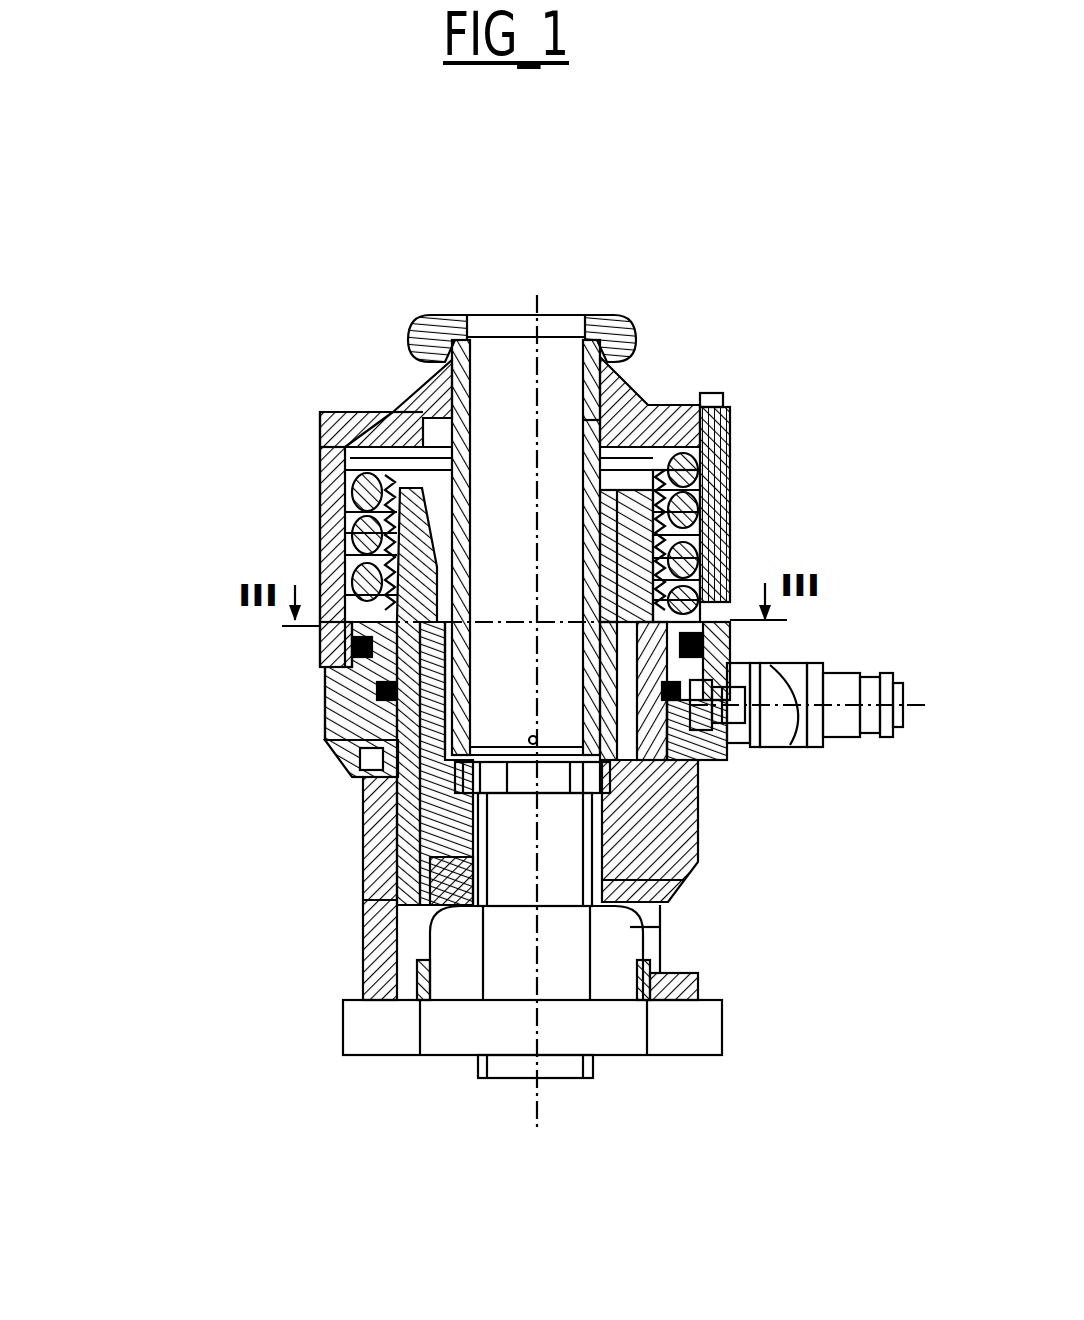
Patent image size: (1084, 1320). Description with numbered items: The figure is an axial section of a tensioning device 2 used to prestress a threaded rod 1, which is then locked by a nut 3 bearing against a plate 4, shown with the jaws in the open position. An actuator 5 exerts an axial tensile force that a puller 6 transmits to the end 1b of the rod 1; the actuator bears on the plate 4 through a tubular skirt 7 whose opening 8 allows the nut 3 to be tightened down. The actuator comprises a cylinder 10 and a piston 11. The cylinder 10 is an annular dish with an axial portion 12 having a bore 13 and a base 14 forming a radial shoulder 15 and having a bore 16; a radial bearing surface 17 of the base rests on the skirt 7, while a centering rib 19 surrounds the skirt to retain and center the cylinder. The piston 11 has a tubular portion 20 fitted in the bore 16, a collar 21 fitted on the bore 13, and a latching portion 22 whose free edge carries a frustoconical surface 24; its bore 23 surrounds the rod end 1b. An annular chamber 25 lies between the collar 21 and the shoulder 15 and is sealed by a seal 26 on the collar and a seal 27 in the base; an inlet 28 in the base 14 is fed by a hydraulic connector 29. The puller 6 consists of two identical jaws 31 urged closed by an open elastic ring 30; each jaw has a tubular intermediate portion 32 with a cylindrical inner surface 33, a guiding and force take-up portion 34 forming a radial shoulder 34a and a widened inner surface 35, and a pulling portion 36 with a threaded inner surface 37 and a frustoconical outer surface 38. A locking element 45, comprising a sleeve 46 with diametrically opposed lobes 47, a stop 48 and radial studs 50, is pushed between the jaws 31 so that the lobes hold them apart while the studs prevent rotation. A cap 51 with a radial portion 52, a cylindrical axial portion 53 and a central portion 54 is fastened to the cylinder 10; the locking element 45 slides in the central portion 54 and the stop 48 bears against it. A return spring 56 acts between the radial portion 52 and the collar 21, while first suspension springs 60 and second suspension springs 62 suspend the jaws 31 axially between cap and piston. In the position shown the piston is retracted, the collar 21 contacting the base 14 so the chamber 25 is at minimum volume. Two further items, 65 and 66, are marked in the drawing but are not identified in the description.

The threaded rod 1 is at (571, 1067).
The end of the threaded rod 1b is at (578, 906).
The tensioning device 2 is at (738, 280).
The nut 3 is at (463, 975).
The plate 4 is at (463, 1047).
The actuator 5 is at (740, 413).
The puller 6 is at (320, 515).
The tubular skirt 7 is at (380, 973).
The opening 8 is at (685, 900).
The cylinder 10 is at (333, 738).
The piston 11 is at (703, 805).
The axial portion 12 is at (323, 627).
The bore 13 is at (323, 612).
The base 14 is at (347, 690).
The radial shoulder 15 is at (322, 688).
The bore 16 is at (358, 742).
The radial bearing surface 17 is at (362, 793).
The circumferential axial centering rib 19 is at (355, 763).
The tubular portion 20 is at (703, 850).
The collar 21 is at (730, 633).
The radial latching portion 22 is at (683, 893).
The bore 23 is at (700, 878).
The frustoconical surface 24 is at (685, 927).
The annular chamber 25 is at (818, 738).
The seal 26 is at (730, 643).
The seal 27 is at (715, 750).
The inlet 28 is at (745, 735).
The hydraulic connector 29 is at (855, 735).
The open ring 30 is at (730, 533).
The movable jaws 31 is at (320, 537).
The tubular intermediate portion 32 is at (733, 600).
The cylindrical inner surface 33 is at (730, 513).
The guiding and force take-up portion 34 is at (730, 467).
The radial shoulder 34a is at (350, 648).
The widened inner surface 35 is at (653, 410).
The pulling portion 36 is at (372, 813).
The threaded inner surface 37 is at (375, 853).
The frustoconical outer surface 38 is at (375, 903).
The locking element 45 is at (588, 422).
The sleeve 46 is at (457, 468).
The lobes 47 is at (583, 590).
The stop 48 is at (613, 313).
The studs 50 is at (535, 735).
The cap 51 is at (340, 412).
The radial portion 52 is at (385, 410).
The cylindrical axial portion 53 is at (320, 498).
The central portion 54 is at (423, 383).
The return spring 56 is at (322, 470).
The first suspension springs 60 is at (320, 480).
The second suspension springs 62 is at (320, 553).
The thread 65 is at (685, 950).
The thread 66 is at (690, 957).